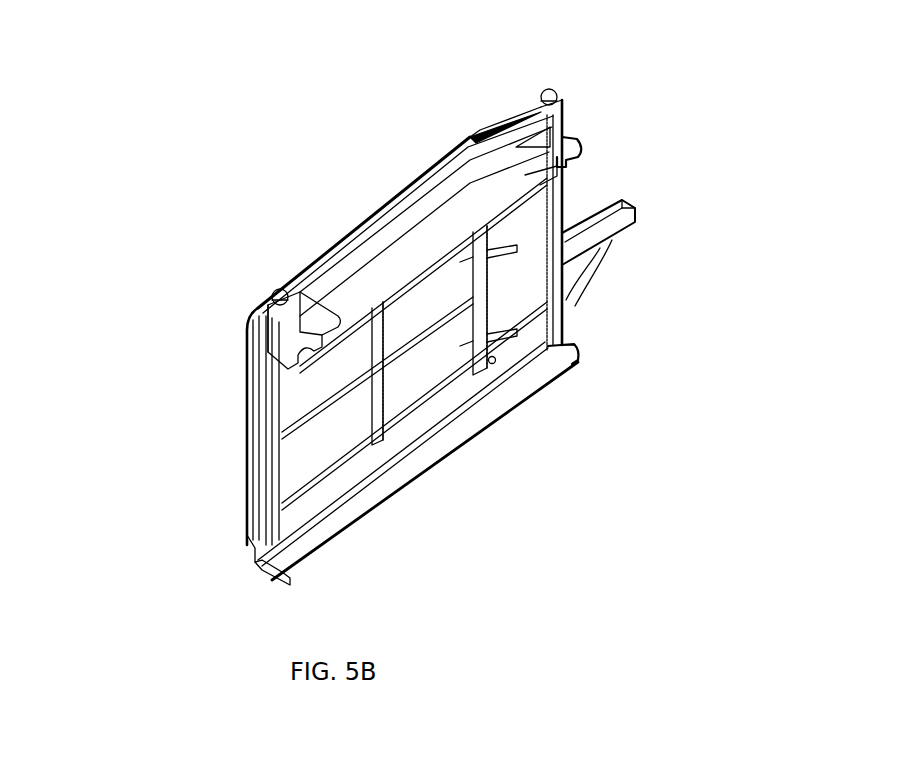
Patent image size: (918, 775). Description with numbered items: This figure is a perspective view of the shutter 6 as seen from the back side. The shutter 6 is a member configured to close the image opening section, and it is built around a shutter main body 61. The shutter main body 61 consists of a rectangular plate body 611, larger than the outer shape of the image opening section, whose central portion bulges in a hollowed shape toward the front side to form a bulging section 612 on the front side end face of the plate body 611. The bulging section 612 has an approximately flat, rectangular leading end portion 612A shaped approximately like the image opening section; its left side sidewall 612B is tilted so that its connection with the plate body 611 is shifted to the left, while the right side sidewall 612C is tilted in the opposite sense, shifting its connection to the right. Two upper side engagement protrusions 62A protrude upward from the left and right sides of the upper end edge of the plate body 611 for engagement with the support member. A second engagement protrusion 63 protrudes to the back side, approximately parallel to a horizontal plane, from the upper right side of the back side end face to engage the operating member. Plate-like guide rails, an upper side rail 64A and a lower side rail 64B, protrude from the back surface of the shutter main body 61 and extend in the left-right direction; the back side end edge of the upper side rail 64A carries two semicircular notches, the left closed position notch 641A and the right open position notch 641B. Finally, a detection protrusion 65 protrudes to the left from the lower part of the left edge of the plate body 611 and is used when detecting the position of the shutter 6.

The shutter 6 is at (124, 176).
The shutter main body 61 is at (430, 186).
The plate body 611 is at (247, 400).
The bulging section 612 is at (258, 465).
The leading end portion 612A is at (374, 212).
The left side sidewall 612B is at (492, 130).
The right side sidewall 612C is at (253, 356).
The upper side engagement protrusion 62A is at (549, 89).
The second engagement protrusion 63 is at (318, 300).
The upper side rail 64A is at (570, 142).
The lower side rail 64B is at (570, 338).
The closed position notch 641A is at (570, 172).
The open position notch 641B is at (310, 360).
The detection protrusion 65 is at (614, 203).